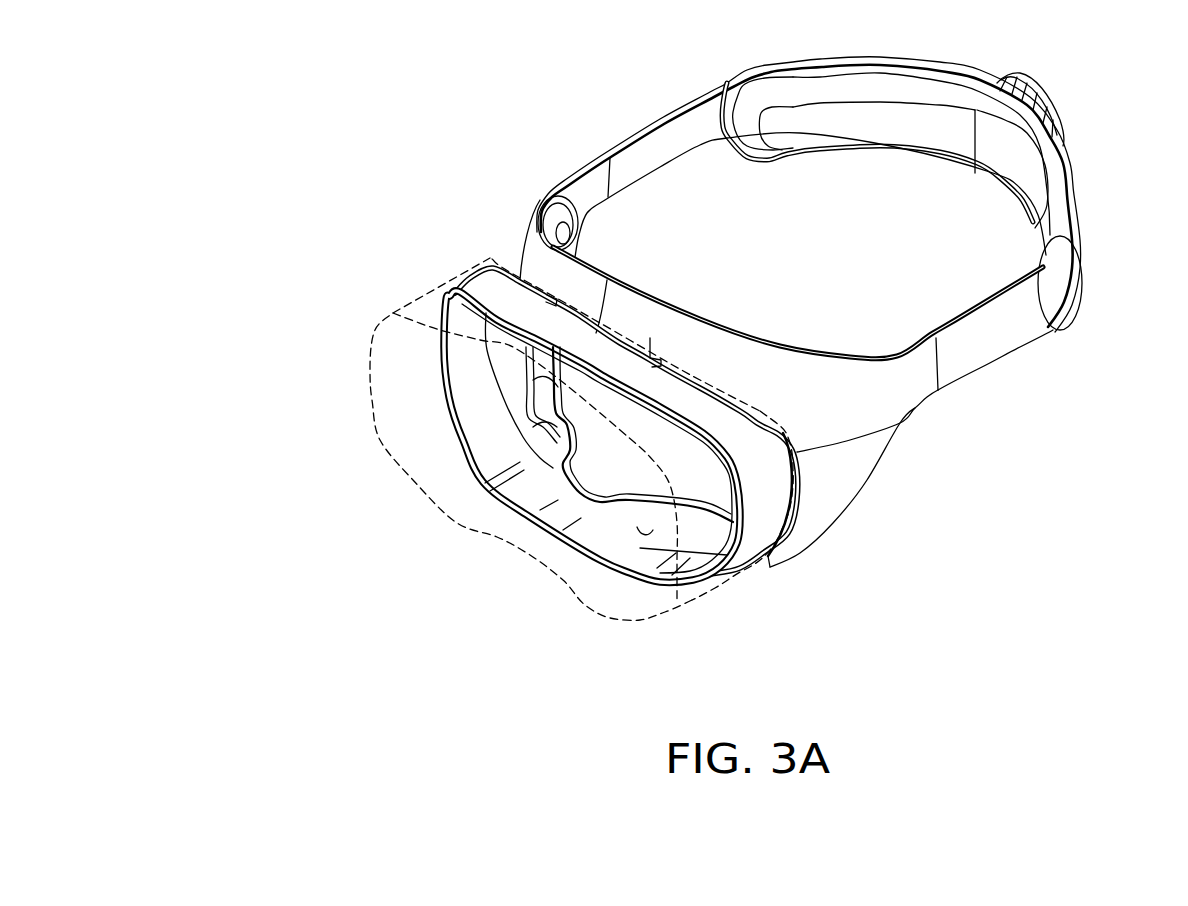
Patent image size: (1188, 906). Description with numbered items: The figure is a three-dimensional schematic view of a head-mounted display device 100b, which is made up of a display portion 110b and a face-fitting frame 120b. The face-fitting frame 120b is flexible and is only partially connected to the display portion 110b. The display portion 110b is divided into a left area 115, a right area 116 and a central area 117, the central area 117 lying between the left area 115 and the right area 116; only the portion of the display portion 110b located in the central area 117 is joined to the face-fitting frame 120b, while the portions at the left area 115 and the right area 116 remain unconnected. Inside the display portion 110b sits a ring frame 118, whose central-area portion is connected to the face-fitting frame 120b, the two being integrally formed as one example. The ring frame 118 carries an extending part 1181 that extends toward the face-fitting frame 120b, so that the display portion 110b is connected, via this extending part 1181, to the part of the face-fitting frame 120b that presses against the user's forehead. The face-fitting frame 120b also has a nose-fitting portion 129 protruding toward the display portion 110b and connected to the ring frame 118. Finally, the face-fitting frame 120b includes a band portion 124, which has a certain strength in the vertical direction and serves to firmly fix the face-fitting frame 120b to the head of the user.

The head-mounted display device 100b is at (649, 362).
The display portion 110b is at (503, 362).
The left area 115 is at (741, 594).
The right area 116 is at (416, 283).
The central area 117 is at (490, 518).
The ring frame 118 is at (494, 288).
The extending part 1181 is at (657, 350).
The nose-fitting portion 129 is at (611, 512).
The face-fitting frame 120b is at (753, 363).
The band portion 124 is at (990, 345).